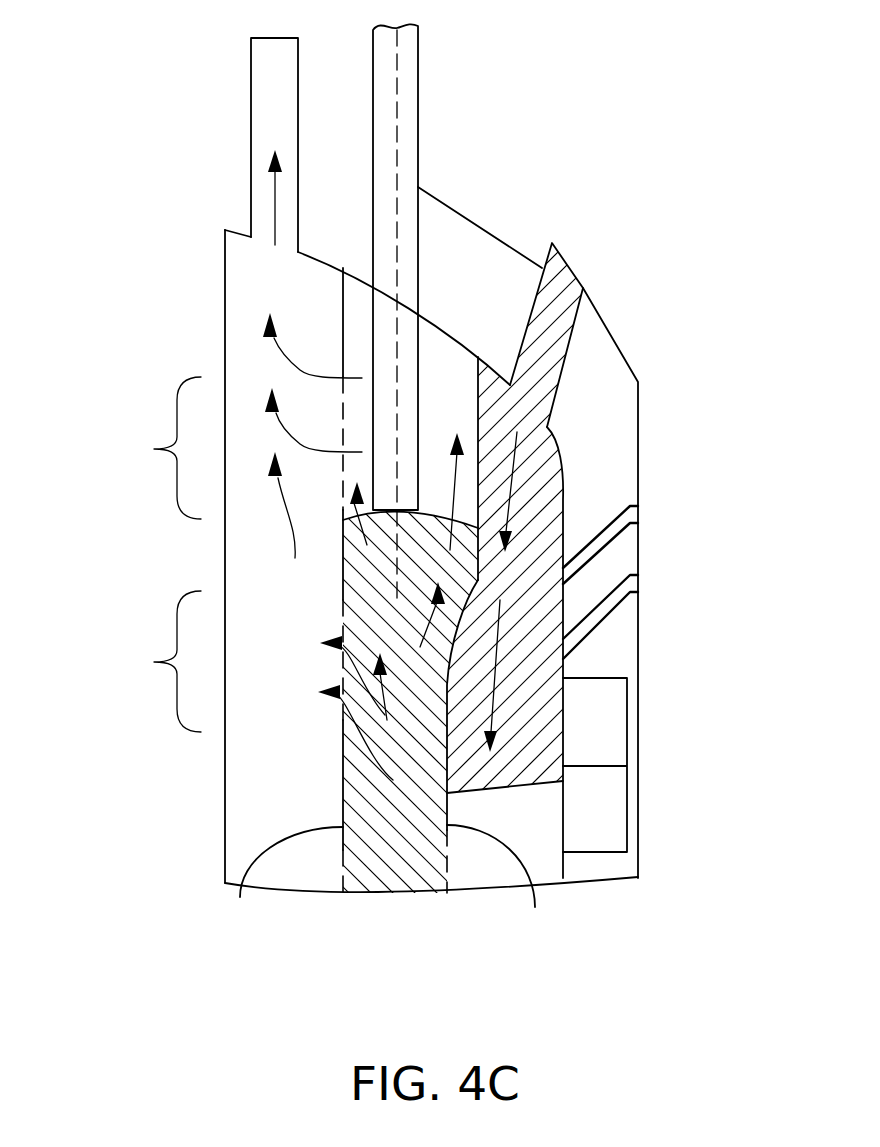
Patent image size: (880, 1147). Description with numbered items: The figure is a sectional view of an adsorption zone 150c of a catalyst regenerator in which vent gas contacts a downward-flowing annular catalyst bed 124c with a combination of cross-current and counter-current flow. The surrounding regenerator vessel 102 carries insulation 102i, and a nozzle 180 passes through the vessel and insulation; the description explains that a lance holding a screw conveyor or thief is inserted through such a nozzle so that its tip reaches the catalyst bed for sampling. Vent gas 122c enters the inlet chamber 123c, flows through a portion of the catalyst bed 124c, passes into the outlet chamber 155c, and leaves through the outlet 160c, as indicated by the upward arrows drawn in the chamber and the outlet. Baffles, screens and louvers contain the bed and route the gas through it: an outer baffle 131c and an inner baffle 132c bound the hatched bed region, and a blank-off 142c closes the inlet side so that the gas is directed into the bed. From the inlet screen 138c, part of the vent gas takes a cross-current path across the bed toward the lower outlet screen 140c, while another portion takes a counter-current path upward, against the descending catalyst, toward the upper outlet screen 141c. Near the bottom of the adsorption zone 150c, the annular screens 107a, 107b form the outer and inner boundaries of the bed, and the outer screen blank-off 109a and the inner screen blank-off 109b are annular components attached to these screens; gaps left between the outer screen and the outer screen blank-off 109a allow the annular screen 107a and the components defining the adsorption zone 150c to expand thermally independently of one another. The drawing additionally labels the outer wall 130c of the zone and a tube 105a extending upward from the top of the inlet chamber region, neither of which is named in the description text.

The regenerator vessel 102 is at (432, 320).
The insulation 102i is at (515, 243).
The sample tube 105a is at (452, 73).
The annular screen 107a is at (460, 899).
The annular screen 107b is at (346, 898).
The outer screen blank-off 109a is at (516, 880).
The inner screen blank-off 109b is at (270, 881).
The vent gas 122c is at (583, 288).
The inlet chamber 123c is at (545, 464).
The catalyst bed 124c is at (406, 910).
The outer wall 130c is at (228, 769).
The body shoulder 131c is at (450, 578).
The upper chamber 132c is at (343, 312).
The inlet screen 138c is at (466, 794).
The lower outlet screen 140c is at (240, 685).
The upper outlet screen 141c is at (144, 448).
The retainer block 142c is at (556, 774).
The adsorption zone 150c is at (160, 197).
The outlet chamber 155c is at (244, 320).
The outlet 160c is at (215, 80).
The nozzle 180 is at (622, 552).